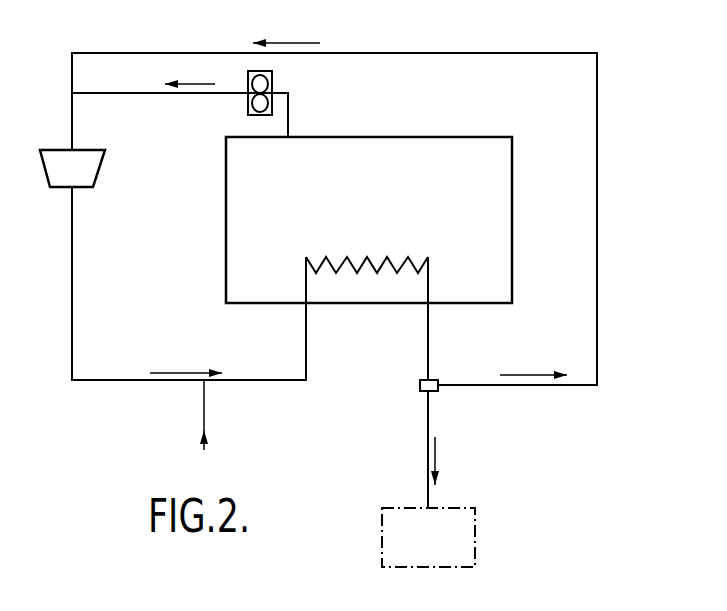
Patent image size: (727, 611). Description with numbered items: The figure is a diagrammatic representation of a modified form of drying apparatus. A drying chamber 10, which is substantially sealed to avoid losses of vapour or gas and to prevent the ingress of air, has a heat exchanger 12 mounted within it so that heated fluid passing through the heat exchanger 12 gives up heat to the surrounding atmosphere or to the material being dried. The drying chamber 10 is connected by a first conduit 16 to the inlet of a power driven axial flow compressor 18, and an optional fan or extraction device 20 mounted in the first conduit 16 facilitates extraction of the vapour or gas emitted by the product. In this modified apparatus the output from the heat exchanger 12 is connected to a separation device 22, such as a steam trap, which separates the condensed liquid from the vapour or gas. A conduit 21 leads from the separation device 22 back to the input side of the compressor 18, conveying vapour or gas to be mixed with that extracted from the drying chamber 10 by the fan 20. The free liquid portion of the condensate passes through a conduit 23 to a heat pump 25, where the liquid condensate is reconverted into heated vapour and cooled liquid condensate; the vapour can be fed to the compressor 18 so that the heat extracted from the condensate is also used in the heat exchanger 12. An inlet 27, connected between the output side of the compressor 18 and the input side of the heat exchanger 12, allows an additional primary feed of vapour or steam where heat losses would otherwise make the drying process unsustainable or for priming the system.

The drying chamber 10 is at (453, 137).
The heat exchanger 12 is at (306, 258).
The first conduit 16 is at (184, 94).
The power driven axial flow compressor 18 is at (103, 168).
The fan or extraction device 20 is at (268, 104).
The conduit 21 is at (598, 272).
The separation device 22 is at (421, 392).
The conduit 23 is at (428, 458).
The heat pump 25 is at (475, 550).
The inlet 27 is at (204, 424).